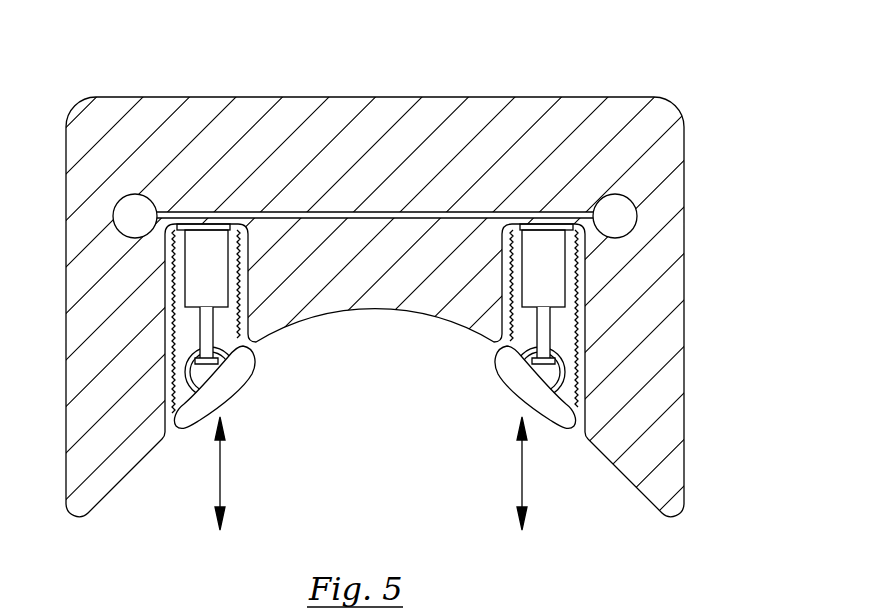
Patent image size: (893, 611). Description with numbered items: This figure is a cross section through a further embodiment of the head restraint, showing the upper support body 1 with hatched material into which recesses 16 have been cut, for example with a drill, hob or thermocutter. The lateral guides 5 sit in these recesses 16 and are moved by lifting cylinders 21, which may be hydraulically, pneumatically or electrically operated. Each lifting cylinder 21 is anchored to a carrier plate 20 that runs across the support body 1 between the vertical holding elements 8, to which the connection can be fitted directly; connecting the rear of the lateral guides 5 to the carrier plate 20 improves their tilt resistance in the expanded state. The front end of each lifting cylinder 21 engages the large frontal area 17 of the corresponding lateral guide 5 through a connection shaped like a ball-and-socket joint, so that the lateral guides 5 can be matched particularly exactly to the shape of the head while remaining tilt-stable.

The upper support body 1 is at (643, 412).
The lateral guide 5 is at (562, 325).
The vertical holding element 8 is at (615, 213).
The recess 16 is at (585, 422).
The large frontal area 17 is at (218, 382).
The carrier plate 20 is at (468, 213).
The lifting cylinder 21 is at (552, 272).